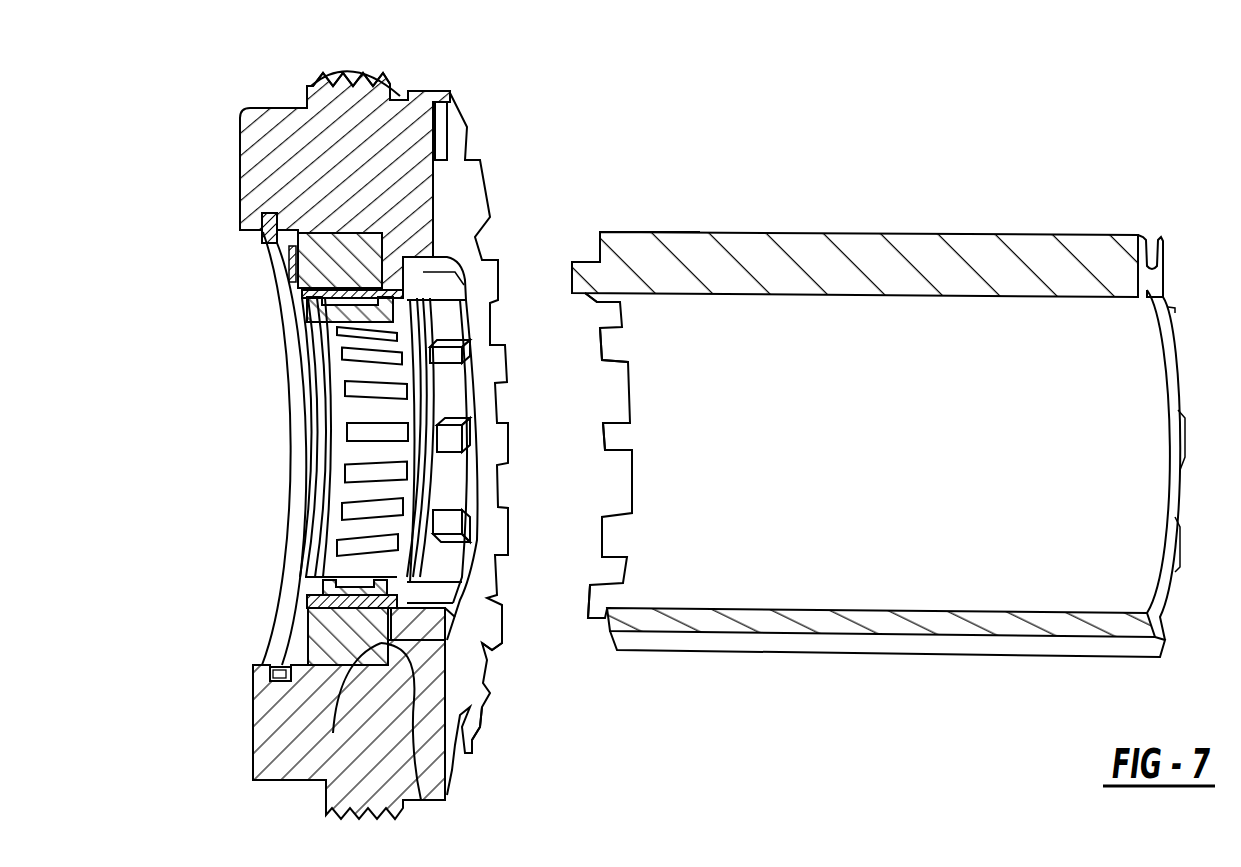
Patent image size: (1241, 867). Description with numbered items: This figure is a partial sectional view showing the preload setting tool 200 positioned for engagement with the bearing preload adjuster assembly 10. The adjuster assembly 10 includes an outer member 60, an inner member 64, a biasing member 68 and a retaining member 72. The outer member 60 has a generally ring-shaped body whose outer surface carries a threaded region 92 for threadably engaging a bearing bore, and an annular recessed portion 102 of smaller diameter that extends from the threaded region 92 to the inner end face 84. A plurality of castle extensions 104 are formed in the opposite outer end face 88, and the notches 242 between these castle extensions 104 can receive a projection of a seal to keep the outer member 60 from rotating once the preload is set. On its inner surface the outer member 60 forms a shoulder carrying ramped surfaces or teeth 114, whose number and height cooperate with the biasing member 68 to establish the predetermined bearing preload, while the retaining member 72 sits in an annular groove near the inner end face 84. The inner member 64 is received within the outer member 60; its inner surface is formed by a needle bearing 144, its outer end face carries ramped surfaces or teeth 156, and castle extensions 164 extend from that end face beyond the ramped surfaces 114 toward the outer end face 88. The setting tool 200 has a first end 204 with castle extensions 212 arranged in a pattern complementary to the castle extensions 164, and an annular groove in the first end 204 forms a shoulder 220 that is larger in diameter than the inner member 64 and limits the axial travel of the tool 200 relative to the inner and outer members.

The bearing preload adjuster assembly 10 is at (200, 154).
The annular recessed portion 102 is at (285, 110).
The threaded region 92 is at (369, 76).
The biasing member 68 is at (290, 268).
The needle bearing 144 is at (367, 413).
The retaining member 72 is at (285, 648).
The inner end face 84 is at (253, 710).
The inner member 64 is at (338, 633).
The ramped surfaces or teeth 156 is at (333, 733).
The ramped surfaces or teeth 114 is at (421, 800).
The outer member 60 is at (432, 778).
The outer end face 88 is at (450, 773).
The castle extensions 104 is at (483, 712).
The notches 242 is at (487, 670).
The castle extensions 164 is at (440, 567).
The preload setting tool 200 is at (847, 216).
The castle extensions 212 is at (585, 293).
The first end 204 is at (590, 262).
The shoulder 220 is at (600, 237).